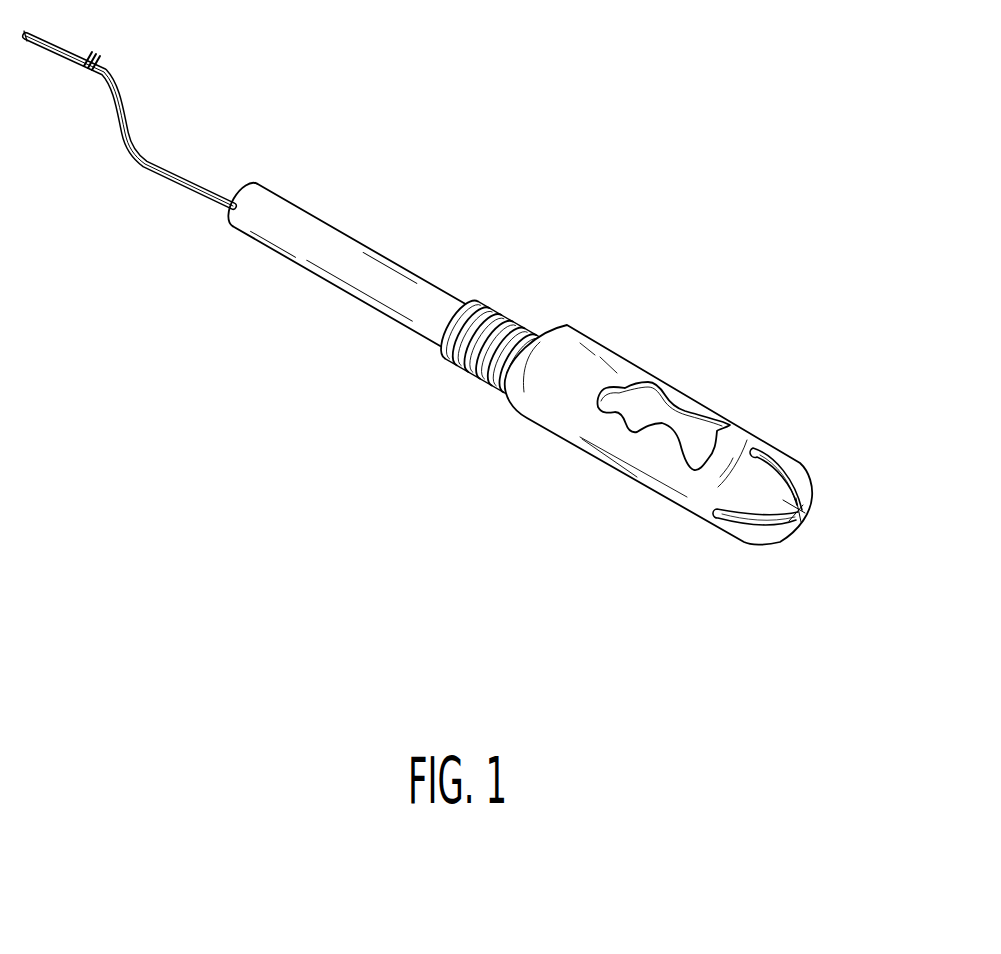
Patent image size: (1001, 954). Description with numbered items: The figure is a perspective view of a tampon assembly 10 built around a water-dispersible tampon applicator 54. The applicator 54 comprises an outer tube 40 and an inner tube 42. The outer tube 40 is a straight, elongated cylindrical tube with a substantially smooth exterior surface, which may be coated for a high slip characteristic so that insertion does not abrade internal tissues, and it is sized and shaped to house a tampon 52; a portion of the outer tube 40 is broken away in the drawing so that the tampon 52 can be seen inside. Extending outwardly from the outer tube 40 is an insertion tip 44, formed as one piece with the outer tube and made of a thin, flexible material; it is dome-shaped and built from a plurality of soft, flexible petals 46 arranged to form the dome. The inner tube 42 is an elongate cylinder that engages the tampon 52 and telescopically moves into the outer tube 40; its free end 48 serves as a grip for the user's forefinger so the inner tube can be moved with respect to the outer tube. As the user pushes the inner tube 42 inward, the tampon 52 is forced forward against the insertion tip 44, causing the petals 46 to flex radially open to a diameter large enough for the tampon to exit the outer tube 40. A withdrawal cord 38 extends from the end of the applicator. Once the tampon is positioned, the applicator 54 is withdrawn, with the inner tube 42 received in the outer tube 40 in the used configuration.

The tampon assembly 10 is at (553, 263).
The withdrawal cord 38 is at (133, 137).
The outer tube 40 is at (567, 420).
The inner tube 42 is at (296, 247).
The insertion tip 44 is at (808, 500).
The petals 46 is at (803, 488).
The free end 48 is at (247, 185).
The tampon 52 is at (655, 405).
The tampon applicator 54 is at (437, 263).